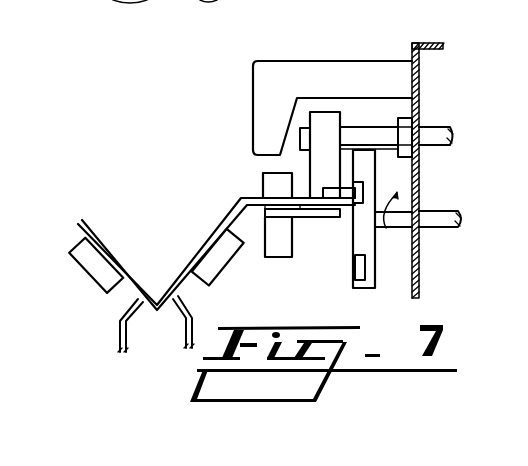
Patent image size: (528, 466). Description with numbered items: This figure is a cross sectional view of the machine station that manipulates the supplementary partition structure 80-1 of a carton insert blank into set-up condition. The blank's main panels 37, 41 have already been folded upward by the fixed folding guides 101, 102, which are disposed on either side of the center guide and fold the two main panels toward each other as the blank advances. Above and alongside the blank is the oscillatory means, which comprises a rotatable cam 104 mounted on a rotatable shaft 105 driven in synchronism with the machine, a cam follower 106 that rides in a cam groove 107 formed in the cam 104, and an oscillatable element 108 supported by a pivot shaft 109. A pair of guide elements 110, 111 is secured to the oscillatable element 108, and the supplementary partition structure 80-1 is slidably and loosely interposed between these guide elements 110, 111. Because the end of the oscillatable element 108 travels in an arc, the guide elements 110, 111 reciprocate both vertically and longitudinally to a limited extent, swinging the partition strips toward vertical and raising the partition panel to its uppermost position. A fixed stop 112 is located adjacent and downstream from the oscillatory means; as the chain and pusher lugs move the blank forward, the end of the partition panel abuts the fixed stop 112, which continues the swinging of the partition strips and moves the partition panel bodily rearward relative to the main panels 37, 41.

The main panel 37 is at (107, 252).
The main panel 41 is at (217, 240).
The supplementary partition structure 80-1 is at (257, 205).
The fixed folding guide 101 is at (120, 337).
The fixed folding guide 102 is at (193, 327).
The rotatable cam 104 is at (368, 247).
The rotatable shaft 105 is at (438, 223).
The cam follower 106 is at (365, 186).
The cam groove 107 is at (358, 268).
The oscillatable element 108 is at (325, 113).
The pivot shaft 109 is at (433, 137).
The guide element 110 is at (265, 202).
The guide element 111 is at (262, 222).
The fixed stop 112 is at (303, 72).